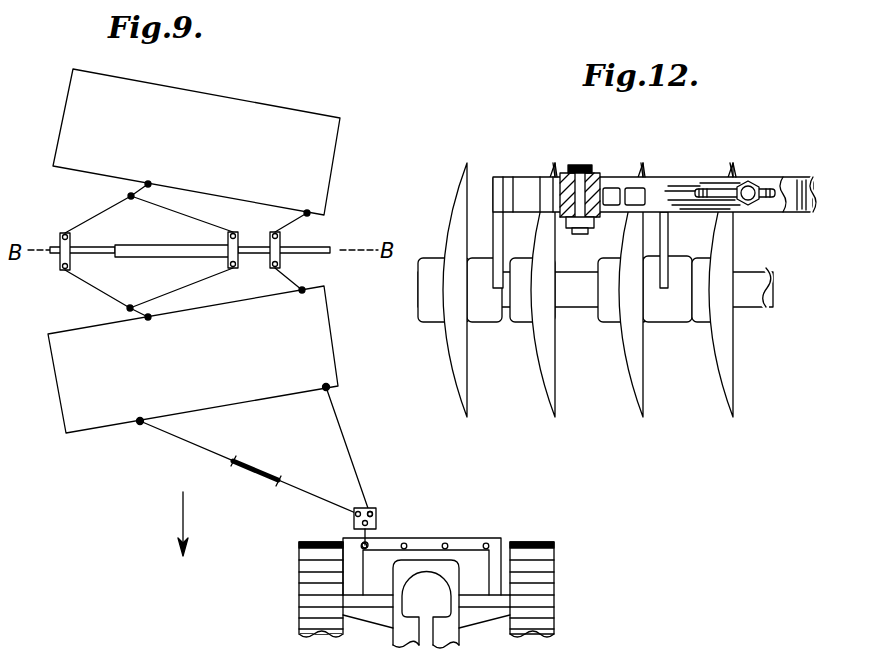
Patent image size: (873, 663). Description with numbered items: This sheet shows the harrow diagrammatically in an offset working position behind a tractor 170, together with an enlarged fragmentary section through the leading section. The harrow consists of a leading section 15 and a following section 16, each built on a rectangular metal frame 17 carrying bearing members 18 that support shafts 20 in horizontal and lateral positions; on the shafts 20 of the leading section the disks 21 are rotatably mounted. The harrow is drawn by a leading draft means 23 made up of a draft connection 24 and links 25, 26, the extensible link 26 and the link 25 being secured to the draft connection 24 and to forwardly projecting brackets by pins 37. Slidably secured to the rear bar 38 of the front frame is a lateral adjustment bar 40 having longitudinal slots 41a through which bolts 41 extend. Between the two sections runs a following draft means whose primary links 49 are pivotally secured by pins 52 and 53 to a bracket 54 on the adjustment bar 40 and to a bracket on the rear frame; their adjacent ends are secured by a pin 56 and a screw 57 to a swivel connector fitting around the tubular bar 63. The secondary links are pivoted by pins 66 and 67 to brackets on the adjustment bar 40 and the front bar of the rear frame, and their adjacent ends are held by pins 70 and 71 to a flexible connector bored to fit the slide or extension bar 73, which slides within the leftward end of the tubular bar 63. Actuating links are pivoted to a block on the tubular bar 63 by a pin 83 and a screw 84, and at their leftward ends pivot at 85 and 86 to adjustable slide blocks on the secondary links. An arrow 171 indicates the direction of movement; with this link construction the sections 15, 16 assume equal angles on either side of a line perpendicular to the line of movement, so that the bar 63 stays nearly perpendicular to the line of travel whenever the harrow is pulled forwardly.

In FIG. 9, the following section 16 is at (262, 113).
In FIG. 9, the leading section 15 is at (247, 392).
In FIG. 9, the slide or extension bar 73 is at (97, 247).
In FIG. 9, the tubular bar 63 is at (318, 248).
In FIG. 9, the pin 71 is at (64, 233).
In FIG. 9, the pin 70 is at (64, 270).
In FIG. 9, the screw 84 is at (240, 228).
In FIG. 9, the pin 83 is at (232, 268).
In FIG. 9, the screw 57 is at (280, 230).
In FIG. 9, the pin 56 is at (277, 266).
In FIG. 9, the pivot 86 is at (131, 196).
In FIG. 9, the pin 67 is at (148, 184).
In FIG. 9, the pin 53 is at (310, 213).
In FIG. 9, the pivot 85 is at (130, 307).
In FIG. 9, the pin 66 is at (148, 318).
In FIG. 9, the pin 52 is at (305, 290).
In FIG. 12, the pin 52 is at (580, 170).
In FIG. 9, the pin 37 is at (326, 387).
In FIG. 9, the link 26 is at (252, 476).
In FIG. 9, the leading draft means 23 is at (348, 443).
In FIG. 9, the draft connection 24 is at (374, 512).
In FIG. 9, the link 25 is at (378, 500).
In FIG. 9, the arrow 171 is at (180, 517).
In FIG. 9, the tractor 170 is at (533, 590).
In FIG. 12, the shaft 20 is at (572, 293).
In FIG. 12, the bearing member 18 is at (490, 282).
In FIG. 12, the disk 21 is at (545, 353).
In FIG. 12, the rectangular metal frame 17 is at (503, 197).
In FIG. 12, the bracket 54 is at (555, 180).
In FIG. 12, the rear bar 38 is at (802, 187).
In FIG. 12, the primary link 49 is at (597, 177).
In FIG. 12, the lateral adjustment bar 40 is at (677, 197).
In FIG. 12, the longitudinal slot 41a is at (707, 197).
In FIG. 12, the bolt 41 is at (750, 197).